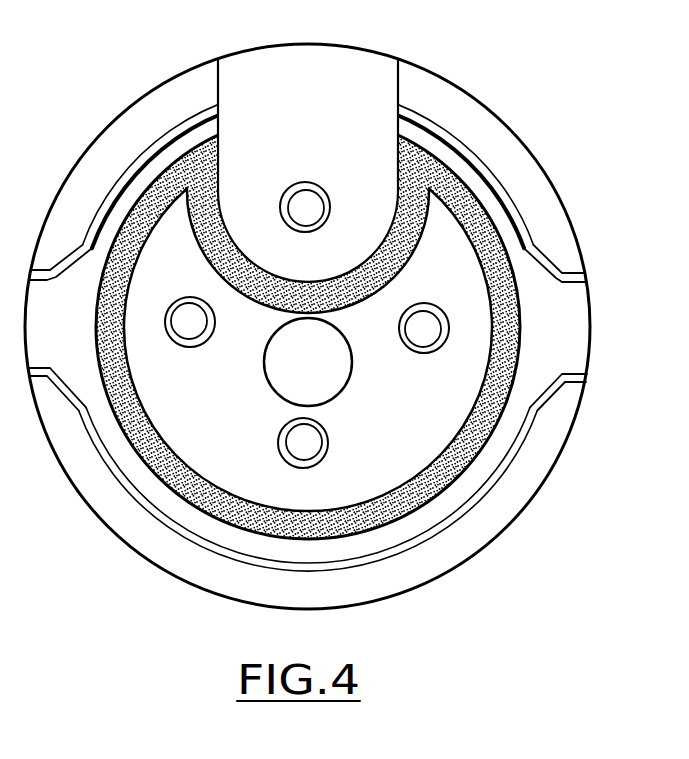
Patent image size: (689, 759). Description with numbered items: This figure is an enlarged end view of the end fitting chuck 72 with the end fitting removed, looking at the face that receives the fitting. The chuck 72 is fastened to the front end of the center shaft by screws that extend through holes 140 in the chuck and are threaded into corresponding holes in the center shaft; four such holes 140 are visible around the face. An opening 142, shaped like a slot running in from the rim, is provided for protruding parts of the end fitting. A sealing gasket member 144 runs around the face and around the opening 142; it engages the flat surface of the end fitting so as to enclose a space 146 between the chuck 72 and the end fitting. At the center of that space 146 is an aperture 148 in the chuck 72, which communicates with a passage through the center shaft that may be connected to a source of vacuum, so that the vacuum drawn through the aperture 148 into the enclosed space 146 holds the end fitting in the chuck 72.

The chuck 72 is at (517, 160).
The holes 140 is at (305, 191).
The opening 142 is at (383, 62).
The sealing gasket member 144 is at (517, 277).
The space 146 is at (433, 427).
The aperture 148 is at (328, 370).